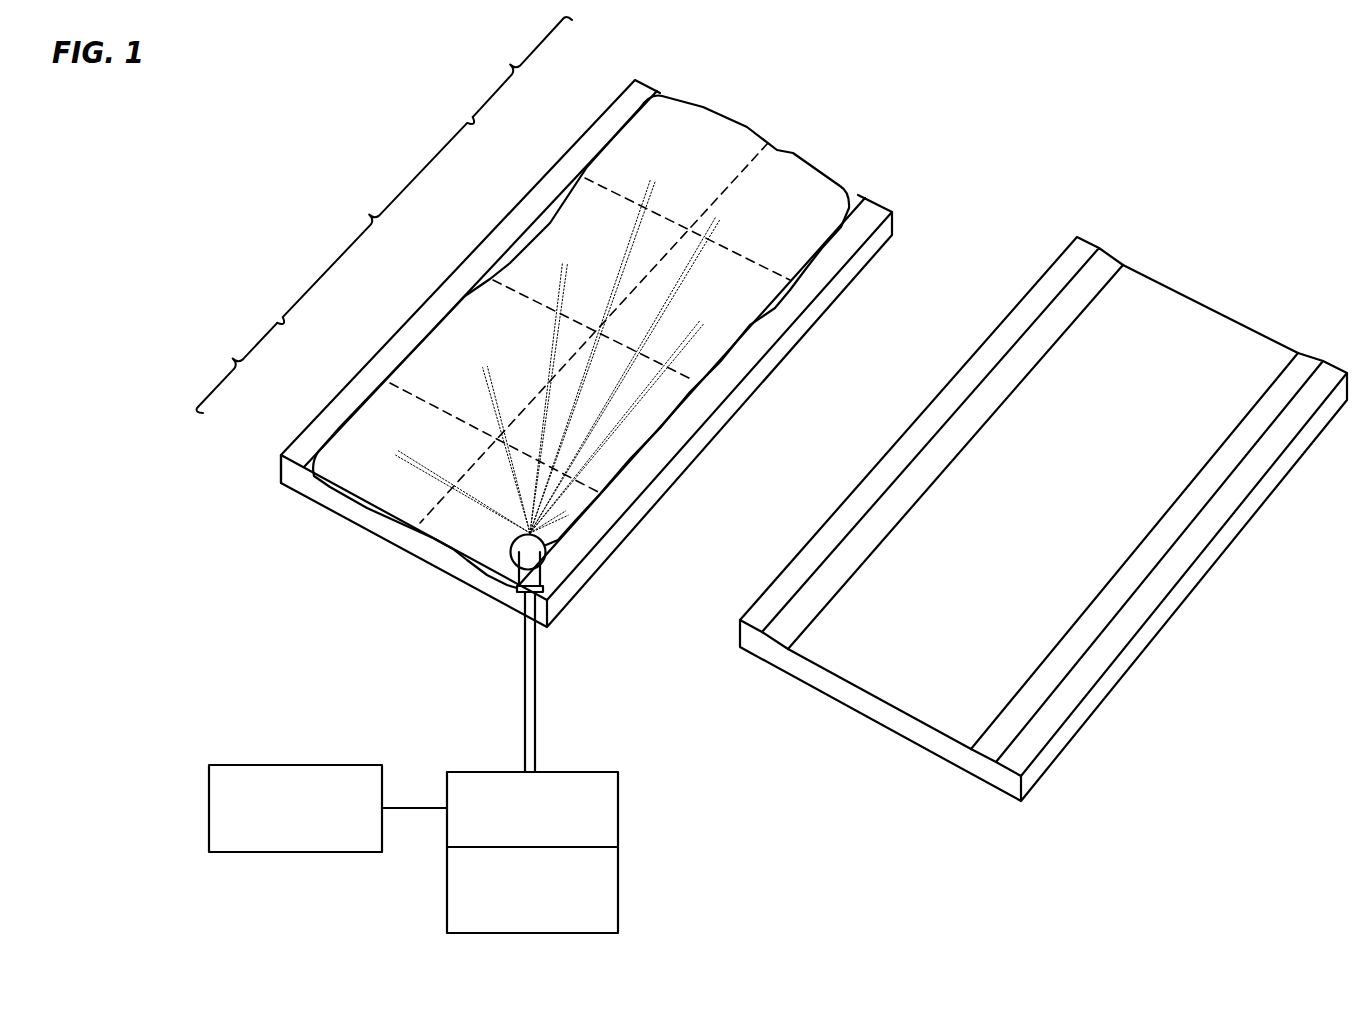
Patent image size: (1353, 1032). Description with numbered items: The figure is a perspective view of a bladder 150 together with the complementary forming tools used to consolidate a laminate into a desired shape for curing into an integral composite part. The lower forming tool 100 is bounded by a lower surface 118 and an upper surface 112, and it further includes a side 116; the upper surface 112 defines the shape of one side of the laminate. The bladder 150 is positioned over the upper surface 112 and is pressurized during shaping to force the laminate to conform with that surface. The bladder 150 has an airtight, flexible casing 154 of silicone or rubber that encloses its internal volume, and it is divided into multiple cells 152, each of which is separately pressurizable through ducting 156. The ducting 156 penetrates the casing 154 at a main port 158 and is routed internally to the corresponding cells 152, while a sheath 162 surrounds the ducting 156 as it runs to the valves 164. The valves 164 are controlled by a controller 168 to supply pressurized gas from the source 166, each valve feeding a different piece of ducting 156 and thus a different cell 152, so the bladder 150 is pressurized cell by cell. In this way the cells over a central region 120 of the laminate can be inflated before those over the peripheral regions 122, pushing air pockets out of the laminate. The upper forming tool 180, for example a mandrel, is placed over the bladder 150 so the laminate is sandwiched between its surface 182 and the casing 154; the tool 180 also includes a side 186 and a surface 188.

The forming tool 100 is at (368, 640).
The upper surface 112 is at (432, 556).
The side 116 is at (285, 472).
The lower surface 118 is at (376, 550).
The region 120 is at (375, 220).
The regions 122 is at (380, 215).
The bladder 150 is at (874, 180).
The cells 152 is at (625, 165).
The casing 154 is at (790, 170).
The ducting 156 is at (721, 223).
The main port 158 is at (548, 553).
The sheath 162 is at (537, 692).
The valves 164 is at (550, 834).
The pressure source 166 is at (550, 917).
The controller 168 is at (313, 836).
The forming tool 180 is at (906, 822).
The surface 182 is at (978, 656).
The side 186 is at (740, 625).
The surface 188 is at (872, 739).